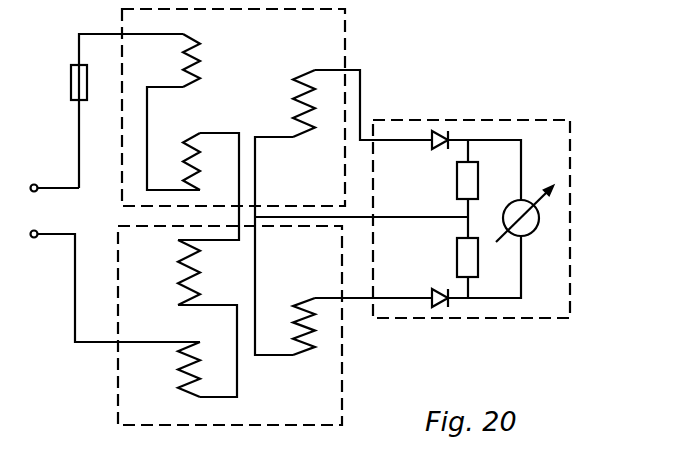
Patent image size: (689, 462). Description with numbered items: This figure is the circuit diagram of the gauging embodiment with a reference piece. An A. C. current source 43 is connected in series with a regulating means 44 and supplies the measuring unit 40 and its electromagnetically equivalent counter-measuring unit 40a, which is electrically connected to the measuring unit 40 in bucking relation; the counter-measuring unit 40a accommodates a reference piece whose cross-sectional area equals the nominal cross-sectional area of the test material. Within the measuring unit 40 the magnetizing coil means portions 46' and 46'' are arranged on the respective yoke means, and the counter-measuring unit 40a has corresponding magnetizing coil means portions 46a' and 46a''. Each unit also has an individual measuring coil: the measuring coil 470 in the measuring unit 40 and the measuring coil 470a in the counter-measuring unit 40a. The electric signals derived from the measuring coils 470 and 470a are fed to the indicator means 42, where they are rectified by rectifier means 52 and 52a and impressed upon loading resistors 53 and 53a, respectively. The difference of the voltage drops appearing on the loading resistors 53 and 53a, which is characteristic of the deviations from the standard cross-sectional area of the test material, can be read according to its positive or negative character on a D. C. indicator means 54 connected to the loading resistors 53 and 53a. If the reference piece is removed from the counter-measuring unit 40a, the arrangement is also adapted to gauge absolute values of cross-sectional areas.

The measuring unit 40 is at (345, 51).
The counter-measuring unit 40a is at (342, 378).
The indicator means 42 is at (570, 218).
The A. C. current source 43 is at (25, 212).
The regulating means 44 is at (71, 88).
The magnetizing coil means portion 46' is at (176, 60).
The magnetizing coil means portion 46'' is at (176, 161).
The magnetizing coil means portion 46a' is at (176, 272).
The magnetizing coil means portion 46a'' is at (176, 369).
The measuring coil 470 is at (299, 103).
The measuring coil 470a is at (299, 328).
The rectifier means 52 is at (438, 150).
The rectifier means 52a is at (434, 294).
The loading resistor 53 is at (457, 181).
The loading resistor 53a is at (457, 256).
The D. C. indicator means 54 is at (539, 218).